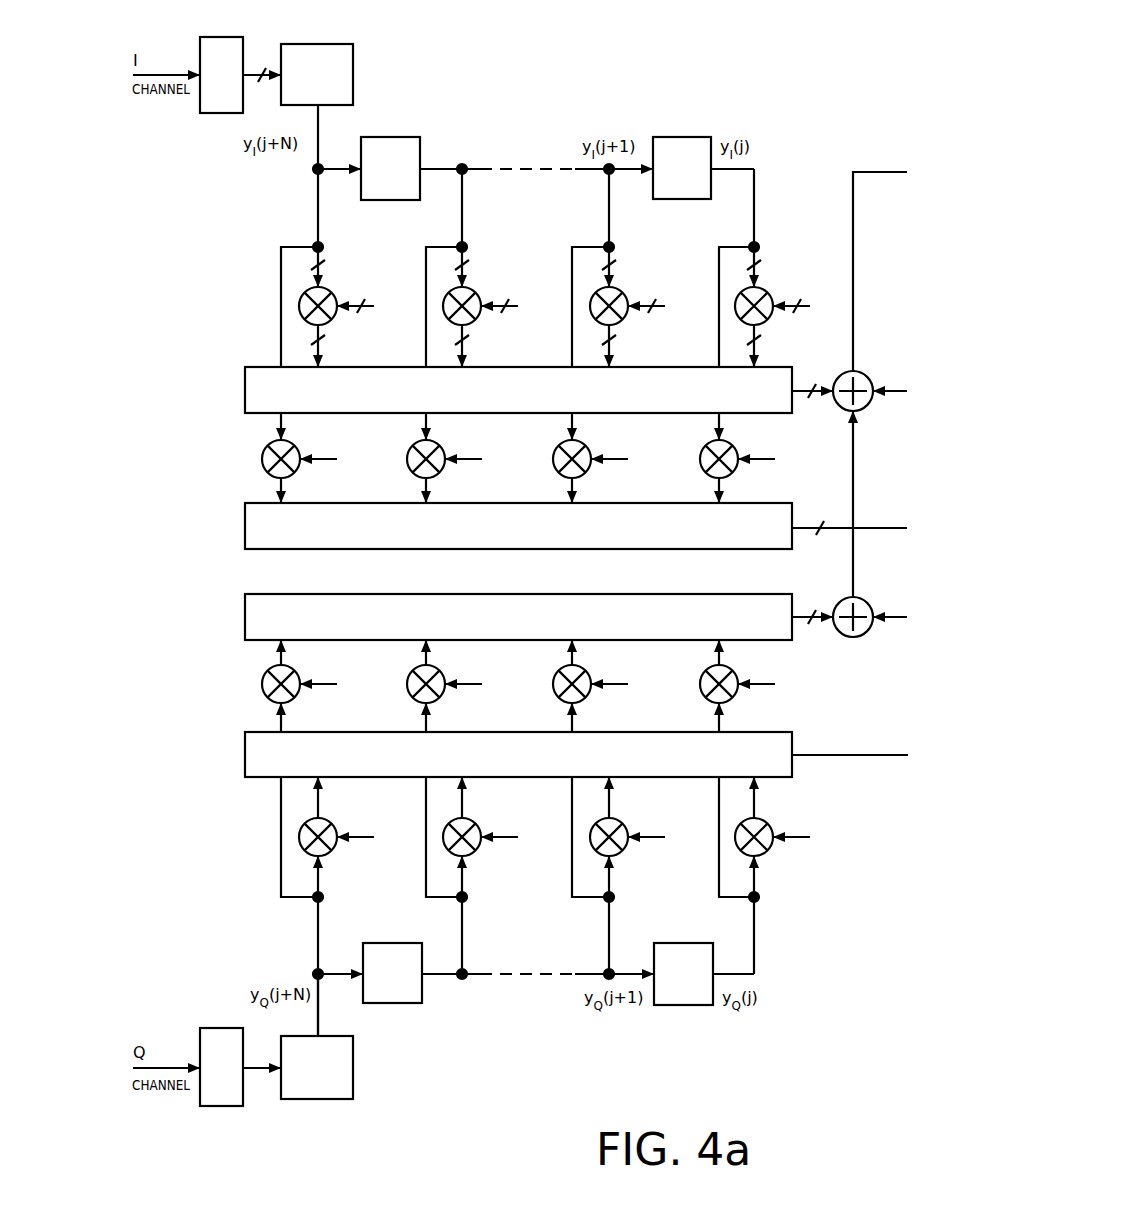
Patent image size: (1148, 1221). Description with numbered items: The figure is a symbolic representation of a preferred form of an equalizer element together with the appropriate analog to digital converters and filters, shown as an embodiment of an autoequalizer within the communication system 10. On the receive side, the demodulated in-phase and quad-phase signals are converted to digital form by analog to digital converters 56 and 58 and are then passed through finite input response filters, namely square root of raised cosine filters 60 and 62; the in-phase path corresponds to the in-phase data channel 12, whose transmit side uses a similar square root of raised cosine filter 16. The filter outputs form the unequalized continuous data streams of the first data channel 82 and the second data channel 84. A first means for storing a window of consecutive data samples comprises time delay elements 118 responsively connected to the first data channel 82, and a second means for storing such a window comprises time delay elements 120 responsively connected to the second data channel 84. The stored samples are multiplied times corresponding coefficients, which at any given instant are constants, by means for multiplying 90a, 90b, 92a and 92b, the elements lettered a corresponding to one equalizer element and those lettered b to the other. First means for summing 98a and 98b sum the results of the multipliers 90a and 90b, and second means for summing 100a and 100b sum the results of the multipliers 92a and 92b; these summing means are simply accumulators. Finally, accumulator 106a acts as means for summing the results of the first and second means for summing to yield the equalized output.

The analog to digital converter 56 is at (200, 45).
The analog to digital converter 58 is at (200, 1036).
The communication system 10 is at (294, 160).
The in-phase data channel 12 is at (593, 436).
The square root of raised cosine filter 16 is at (526, 342).
The square root of raised cosine filter 60 is at (353, 73).
The square root of raised cosine filter 62 is at (353, 1068).
The first data channel 82 is at (318, 135).
The second data channel 84 is at (318, 1005).
The time delay elements 118 is at (415, 137).
The time delay elements 120 is at (422, 990).
The means for multiplying 90a is at (299, 306).
The means for multiplying 90b is at (299, 837).
The means for multiplying 92a is at (262, 684).
The means for multiplying 92b is at (262, 459).
The first means for summing 98a is at (245, 392).
The first means for summing 98b is at (245, 757).
The second means for summing 100a is at (245, 620).
The second means for summing 100b is at (245, 532).
The accumulator 106a is at (860, 372).